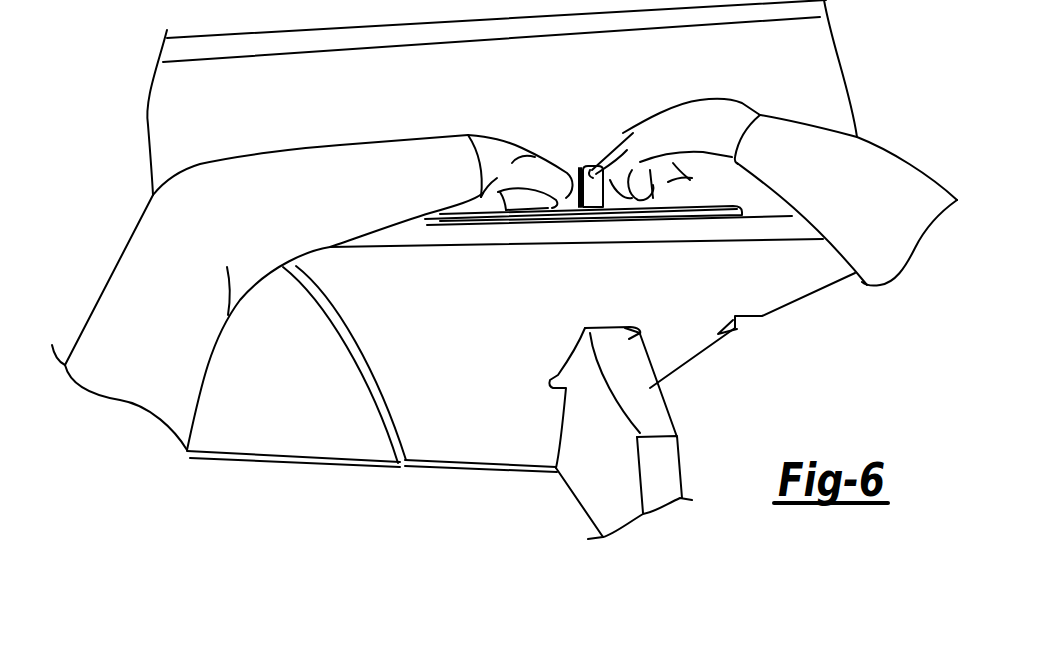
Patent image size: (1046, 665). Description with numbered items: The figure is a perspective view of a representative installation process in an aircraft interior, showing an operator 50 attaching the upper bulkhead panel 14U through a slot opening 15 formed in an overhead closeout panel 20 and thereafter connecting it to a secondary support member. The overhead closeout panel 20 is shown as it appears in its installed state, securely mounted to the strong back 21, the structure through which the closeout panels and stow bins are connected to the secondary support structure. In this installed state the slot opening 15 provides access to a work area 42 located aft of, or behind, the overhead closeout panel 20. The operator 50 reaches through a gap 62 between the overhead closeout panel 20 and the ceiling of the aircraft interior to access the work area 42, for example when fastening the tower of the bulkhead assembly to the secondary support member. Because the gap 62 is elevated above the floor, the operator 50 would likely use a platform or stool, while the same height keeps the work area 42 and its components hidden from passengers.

The gap 62 is at (197, 117).
The strong back 21 is at (636, 79).
The work area 42 is at (805, 111).
The operator 50 is at (162, 294).
The overhead closeout panel 20 is at (479, 351).
The slot opening 15 is at (632, 330).
The upper bulkhead panel 14U is at (585, 477).